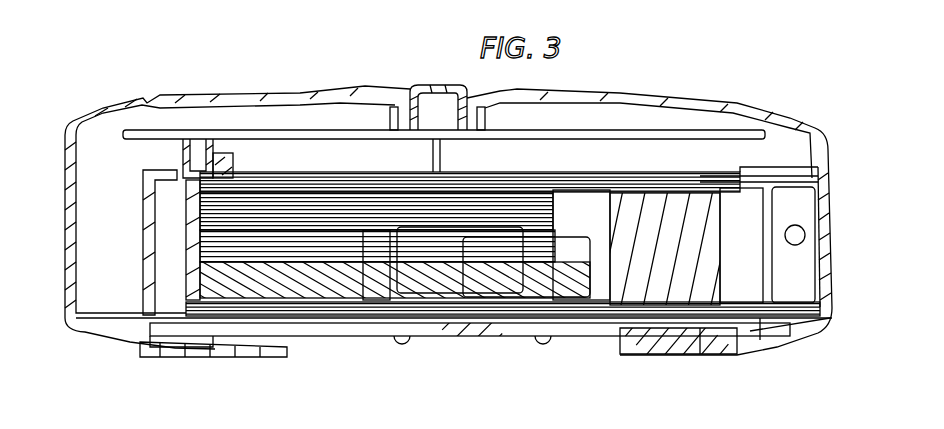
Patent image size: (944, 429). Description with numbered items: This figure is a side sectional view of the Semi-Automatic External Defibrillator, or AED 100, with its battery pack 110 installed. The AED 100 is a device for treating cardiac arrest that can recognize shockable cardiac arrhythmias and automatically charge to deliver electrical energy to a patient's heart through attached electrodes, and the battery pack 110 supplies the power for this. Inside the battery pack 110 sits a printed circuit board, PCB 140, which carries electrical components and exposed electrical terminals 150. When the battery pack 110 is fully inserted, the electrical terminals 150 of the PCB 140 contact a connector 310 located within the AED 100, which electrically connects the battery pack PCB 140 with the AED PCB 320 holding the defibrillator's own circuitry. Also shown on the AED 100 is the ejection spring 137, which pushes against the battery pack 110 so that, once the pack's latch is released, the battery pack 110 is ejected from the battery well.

The Semi-Automatic External Defibrillator (AED) 100 is at (740, 90).
The battery pack 110 is at (594, 213).
The ejection spring 137 is at (200, 218).
The printed circuit board (PCB) 140 is at (588, 190).
The electrical terminals 150 is at (238, 190).
The connector 310 is at (228, 154).
The AED PCB 320 is at (312, 127).